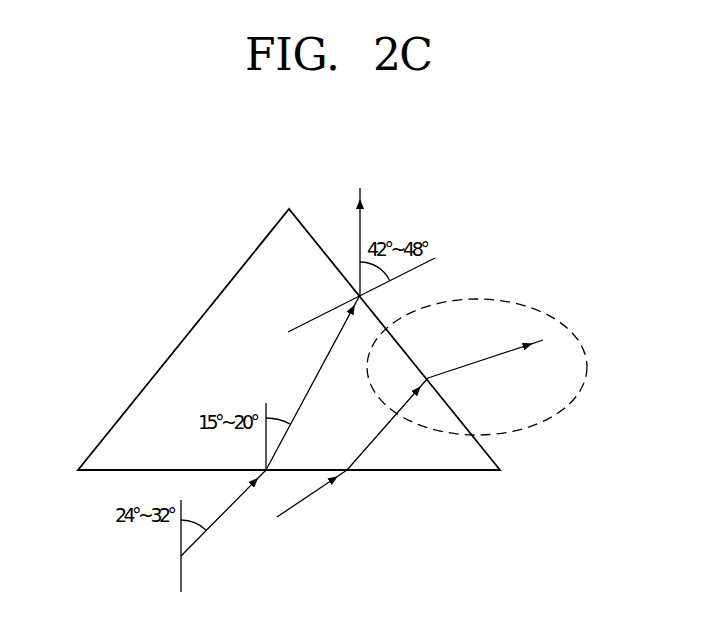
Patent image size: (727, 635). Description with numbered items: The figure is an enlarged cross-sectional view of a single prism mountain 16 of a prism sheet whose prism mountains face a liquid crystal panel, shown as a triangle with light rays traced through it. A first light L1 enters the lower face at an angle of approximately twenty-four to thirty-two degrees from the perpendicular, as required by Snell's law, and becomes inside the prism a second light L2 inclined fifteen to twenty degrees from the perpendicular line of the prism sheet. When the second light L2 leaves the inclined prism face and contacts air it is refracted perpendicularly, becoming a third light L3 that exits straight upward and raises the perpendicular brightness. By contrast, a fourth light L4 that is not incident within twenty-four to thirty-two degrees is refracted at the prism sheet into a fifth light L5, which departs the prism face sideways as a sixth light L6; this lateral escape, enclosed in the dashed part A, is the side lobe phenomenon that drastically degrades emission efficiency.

The prism 16 is at (197, 352).
The part A is at (500, 300).
The first light L1 is at (223, 513).
The second light L2 is at (313, 382).
The third light L3 is at (345, 241).
The fourth light L4 is at (317, 493).
The fifth light L5 is at (387, 418).
The sixth light L6 is at (485, 350).